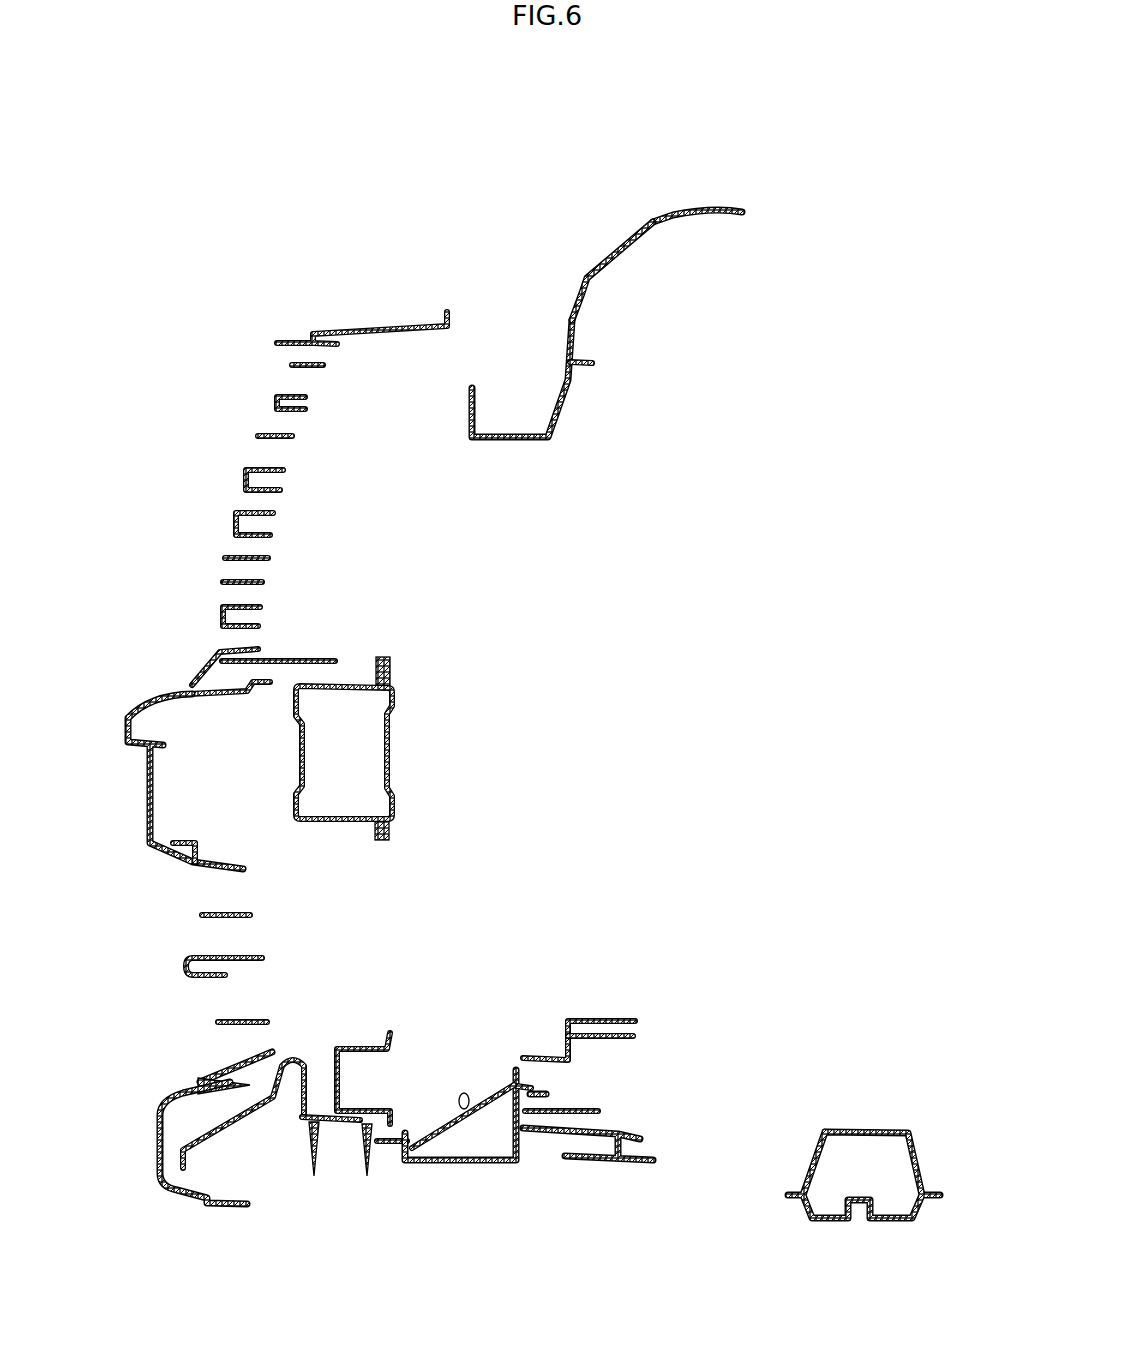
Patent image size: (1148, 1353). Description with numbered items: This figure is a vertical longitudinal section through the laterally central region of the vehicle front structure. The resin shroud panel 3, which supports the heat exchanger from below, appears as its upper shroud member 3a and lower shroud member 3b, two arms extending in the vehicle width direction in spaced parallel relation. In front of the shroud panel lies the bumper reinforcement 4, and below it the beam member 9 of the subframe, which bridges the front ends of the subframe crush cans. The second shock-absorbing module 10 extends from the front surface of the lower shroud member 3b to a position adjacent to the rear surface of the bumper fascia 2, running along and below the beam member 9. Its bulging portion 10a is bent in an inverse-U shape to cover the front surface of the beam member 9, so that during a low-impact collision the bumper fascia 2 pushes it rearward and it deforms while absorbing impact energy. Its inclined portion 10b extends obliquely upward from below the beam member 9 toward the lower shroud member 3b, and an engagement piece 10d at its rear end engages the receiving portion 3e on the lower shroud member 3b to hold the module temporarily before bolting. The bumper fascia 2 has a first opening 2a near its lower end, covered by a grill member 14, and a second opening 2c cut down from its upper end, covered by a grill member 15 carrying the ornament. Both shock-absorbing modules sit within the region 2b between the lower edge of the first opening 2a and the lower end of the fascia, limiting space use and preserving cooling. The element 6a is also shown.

The bumper fascia 2 is at (140, 770).
The first opening 2a is at (243, 1043).
The region between lower edge of first opening and lower end of bumper fascia 2b is at (158, 1160).
The second opening 2c is at (235, 637).
The resin shroud panel 3 is at (677, 205).
The upper shroud member 3a is at (600, 265).
The lower shroud member 3b is at (627, 1167).
The receiving portion 3e is at (530, 1067).
The bumper reinforcement 4 is at (295, 763).
The bracket 6a is at (848, 1225).
The beam member 9 is at (375, 1137).
The second shock-absorbing module 10 is at (237, 1145).
The bulging portion 10a is at (309, 1108).
The inclined portion 10b is at (468, 1110).
The engagement piece 10d is at (546, 1093).
The grill member 14 is at (162, 872).
The grill member 15 is at (262, 346).